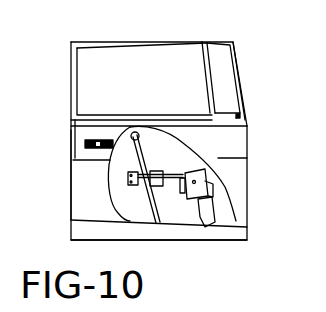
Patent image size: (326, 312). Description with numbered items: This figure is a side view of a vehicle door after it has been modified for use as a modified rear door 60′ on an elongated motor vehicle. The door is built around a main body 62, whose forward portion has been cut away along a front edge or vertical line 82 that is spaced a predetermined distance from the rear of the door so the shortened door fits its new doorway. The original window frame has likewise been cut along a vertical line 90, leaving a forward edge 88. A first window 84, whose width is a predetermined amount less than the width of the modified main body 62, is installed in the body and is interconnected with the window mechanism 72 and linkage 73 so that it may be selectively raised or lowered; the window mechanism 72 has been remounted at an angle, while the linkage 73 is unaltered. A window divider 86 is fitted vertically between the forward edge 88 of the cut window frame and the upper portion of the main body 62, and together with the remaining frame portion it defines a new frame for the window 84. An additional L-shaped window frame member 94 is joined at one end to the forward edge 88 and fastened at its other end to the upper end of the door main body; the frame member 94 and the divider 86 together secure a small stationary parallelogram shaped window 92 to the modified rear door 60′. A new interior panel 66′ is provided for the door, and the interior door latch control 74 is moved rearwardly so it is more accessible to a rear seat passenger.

The modified rear door 60′ is at (66, 78).
The first window 84 is at (131, 95).
The forward edge of the cut window frame 88 is at (203, 42).
The L-shaped window frame member 94 is at (238, 45).
The window divider 86 is at (210, 67).
The vertical line 90 is at (245, 77).
The stationary parallelogram shaped window 92 is at (229, 102).
The interior door latch control 74 is at (85, 144).
The main body 62 is at (78, 176).
The new interior panel 66′ is at (105, 194).
The linkage 73 is at (145, 178).
The window mechanism 72 is at (217, 190).
The front edge or vertical line 82 is at (247, 225).